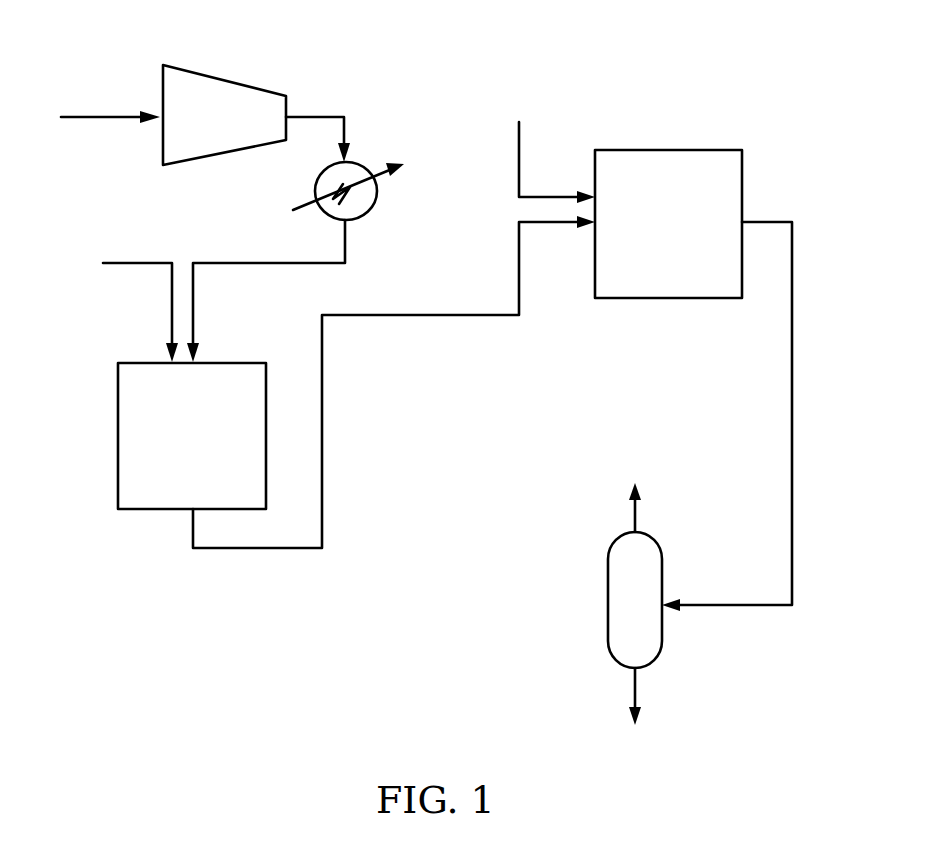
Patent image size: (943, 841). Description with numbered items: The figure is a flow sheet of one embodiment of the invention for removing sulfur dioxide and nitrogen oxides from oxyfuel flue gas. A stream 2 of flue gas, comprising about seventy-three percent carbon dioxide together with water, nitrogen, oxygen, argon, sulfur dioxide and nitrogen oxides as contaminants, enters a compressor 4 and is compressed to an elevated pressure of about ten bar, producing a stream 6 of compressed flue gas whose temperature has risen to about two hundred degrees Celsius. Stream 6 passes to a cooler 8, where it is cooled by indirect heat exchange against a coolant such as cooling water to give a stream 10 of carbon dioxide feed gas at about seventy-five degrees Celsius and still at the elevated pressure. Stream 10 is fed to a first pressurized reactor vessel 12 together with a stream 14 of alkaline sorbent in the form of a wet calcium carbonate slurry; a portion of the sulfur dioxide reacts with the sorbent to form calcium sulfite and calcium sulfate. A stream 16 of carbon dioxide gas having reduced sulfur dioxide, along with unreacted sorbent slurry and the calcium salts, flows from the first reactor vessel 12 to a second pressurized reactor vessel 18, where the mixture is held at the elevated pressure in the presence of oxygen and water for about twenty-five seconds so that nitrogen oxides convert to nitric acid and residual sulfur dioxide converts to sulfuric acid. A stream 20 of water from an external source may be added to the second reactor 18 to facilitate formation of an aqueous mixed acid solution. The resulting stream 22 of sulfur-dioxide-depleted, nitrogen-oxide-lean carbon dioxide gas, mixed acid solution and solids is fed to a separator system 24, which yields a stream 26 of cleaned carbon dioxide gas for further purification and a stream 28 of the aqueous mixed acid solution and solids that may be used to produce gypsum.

The stream of flue gas 2 is at (82, 117).
The compressor 4 is at (227, 80).
The stream of compressed flue gas 6 is at (345, 128).
The cooler 8 is at (375, 208).
The stream of carbon dioxide feed gas 10 is at (257, 262).
The first pressurized reactor vessel 12 is at (104, 427).
The stream of alkaline sorbent 14 is at (130, 263).
The stream of carbon dioxide gas having reduced SO2 16 is at (323, 420).
The second pressurized reactor vessel 18 is at (686, 140).
The stream of water 20 is at (518, 160).
The stream comprising SO2-depleted, NOx-lean carbon dioxide gas 22 is at (792, 372).
The separator system 24 is at (598, 603).
The stream of SO2-depleted, NOx-lean carbon dioxide gas 26 is at (635, 518).
The stream of the aqueous mixed acid solution and the solids 28 is at (635, 693).